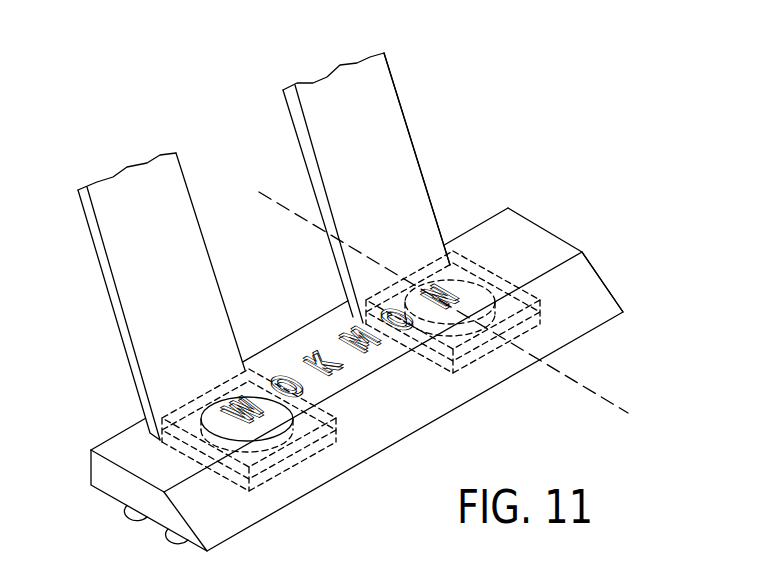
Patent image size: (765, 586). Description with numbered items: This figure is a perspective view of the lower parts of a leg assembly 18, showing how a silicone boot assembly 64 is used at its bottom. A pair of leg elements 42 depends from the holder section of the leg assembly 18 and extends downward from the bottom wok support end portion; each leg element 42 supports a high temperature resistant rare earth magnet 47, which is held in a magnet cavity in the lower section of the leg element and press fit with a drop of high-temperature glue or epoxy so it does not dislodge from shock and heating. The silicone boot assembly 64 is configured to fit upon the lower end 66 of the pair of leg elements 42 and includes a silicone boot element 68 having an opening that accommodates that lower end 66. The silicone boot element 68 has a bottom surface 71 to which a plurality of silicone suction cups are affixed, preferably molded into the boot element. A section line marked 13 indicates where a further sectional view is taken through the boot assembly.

The section line 13- 13 is at (299, 169).
The leg assembly 18 is at (405, 113).
The leg element 42 is at (423, 180).
The high temperature resistant rare earth magnet 47 is at (487, 331).
The silicone boot assembly 64 is at (593, 260).
The lower end 66 is at (440, 352).
The silicone boot element 68 is at (618, 298).
The bottom surface 71 is at (108, 493).